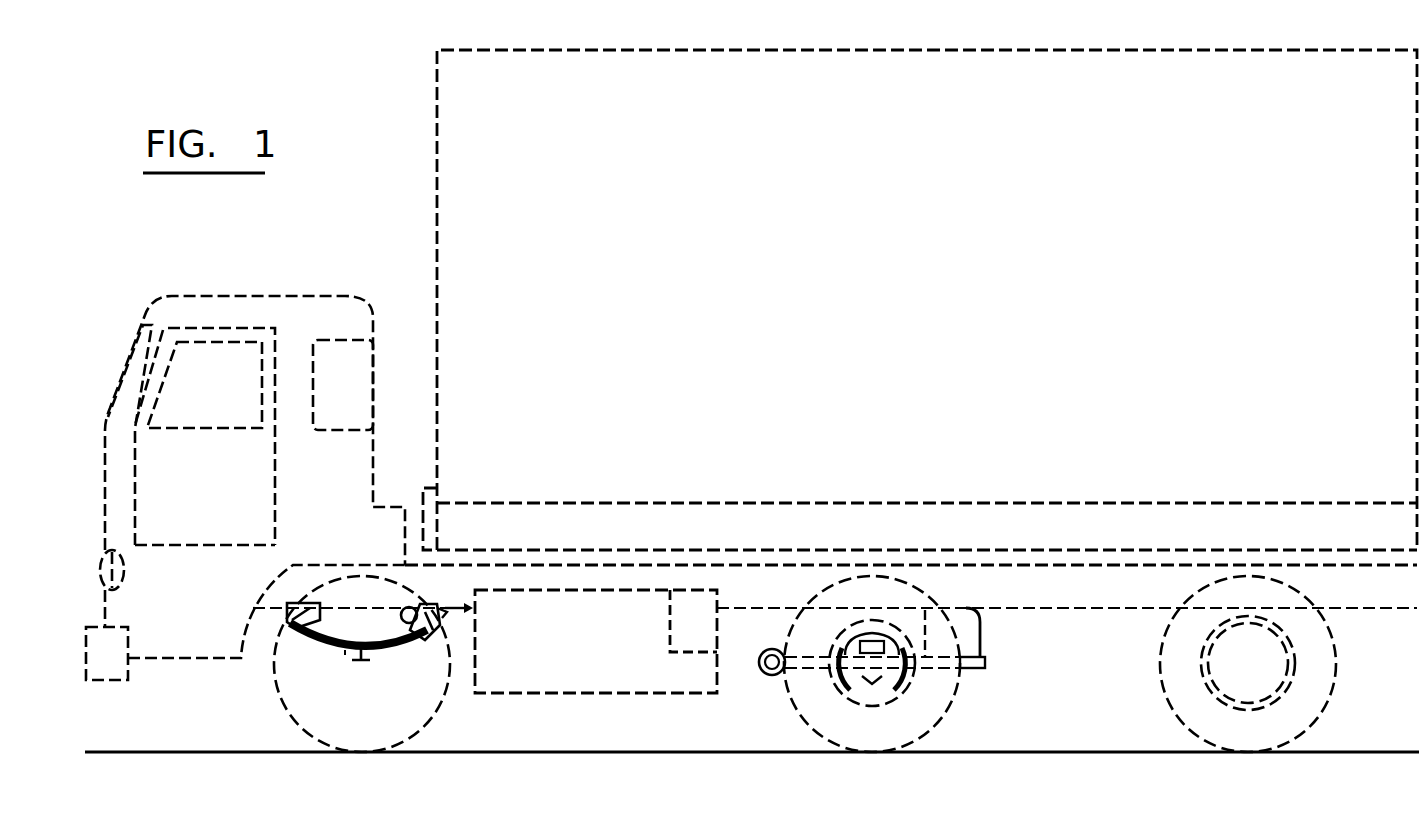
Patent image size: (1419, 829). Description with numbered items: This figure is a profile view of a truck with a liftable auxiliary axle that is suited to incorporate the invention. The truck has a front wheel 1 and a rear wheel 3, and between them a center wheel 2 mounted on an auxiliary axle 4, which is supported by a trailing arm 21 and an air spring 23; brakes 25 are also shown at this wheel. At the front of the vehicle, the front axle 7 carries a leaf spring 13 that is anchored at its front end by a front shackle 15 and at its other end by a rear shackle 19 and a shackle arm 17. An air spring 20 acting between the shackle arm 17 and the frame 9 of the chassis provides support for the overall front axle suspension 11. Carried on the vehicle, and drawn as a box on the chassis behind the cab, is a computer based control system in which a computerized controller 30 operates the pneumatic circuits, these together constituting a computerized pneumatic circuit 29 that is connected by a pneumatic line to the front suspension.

The front wheel 1 is at (296, 721).
The center wheel 2 is at (800, 708).
The rear wheel 3 is at (1336, 680).
The auxiliary axle 4 is at (872, 684).
The front axle 7 is at (371, 662).
The frame 9 is at (447, 614).
The front axle suspension 11 is at (322, 652).
The leaf spring 13 is at (344, 652).
The front shackle 15 is at (287, 626).
The shackle arm 17 is at (435, 640).
The rear shackle 19 is at (455, 606).
The spring shackle 20 is at (407, 607).
The trailing arm 21 is at (793, 672).
The air spring 23 is at (983, 626).
The brakes 25 is at (848, 688).
The computerized pneumatic circuit 29 is at (668, 695).
The computerized controller 30 is at (698, 602).